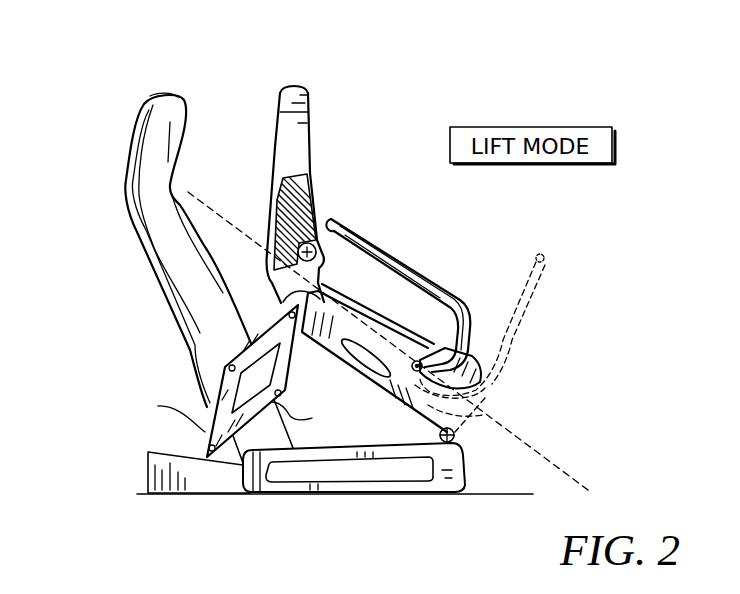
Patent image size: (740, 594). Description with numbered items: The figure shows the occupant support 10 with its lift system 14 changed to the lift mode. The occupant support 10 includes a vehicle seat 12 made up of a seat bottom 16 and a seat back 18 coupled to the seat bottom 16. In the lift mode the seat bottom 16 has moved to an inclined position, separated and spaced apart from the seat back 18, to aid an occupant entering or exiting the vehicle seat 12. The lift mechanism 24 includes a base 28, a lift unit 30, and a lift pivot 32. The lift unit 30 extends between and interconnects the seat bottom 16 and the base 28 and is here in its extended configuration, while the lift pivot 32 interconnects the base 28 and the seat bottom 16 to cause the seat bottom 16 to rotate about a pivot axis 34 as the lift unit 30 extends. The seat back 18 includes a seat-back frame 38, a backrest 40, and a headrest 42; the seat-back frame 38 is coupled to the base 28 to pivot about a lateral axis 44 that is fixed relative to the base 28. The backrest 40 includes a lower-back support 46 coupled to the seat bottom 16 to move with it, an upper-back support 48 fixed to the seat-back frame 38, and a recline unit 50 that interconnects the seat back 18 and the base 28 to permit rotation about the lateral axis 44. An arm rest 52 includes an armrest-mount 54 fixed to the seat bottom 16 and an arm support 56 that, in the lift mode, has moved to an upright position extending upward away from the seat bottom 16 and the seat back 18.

The occupant support 10 is at (60, 118).
The vehicle seat 12 is at (122, 146).
The lift system 14 is at (44, 260).
The seat bottom 16 is at (474, 366).
The seat back 18 is at (199, 202).
The lift mechanism 24 is at (100, 533).
The base 28 is at (250, 485).
The lift unit 30 is at (213, 433).
The lift pivot 32 is at (437, 489).
The pivot axis 34 is at (483, 420).
The seat-back frame 38 is at (283, 424).
The backrest 40 is at (207, 247).
The headrest 42 is at (185, 135).
The lateral axis 44 is at (276, 211).
The lower-back support 46 is at (314, 197).
The upper-back support 48 is at (310, 116).
The recline unit 50 is at (217, 395).
The arm rest 52 is at (473, 274).
The armrest-mount 54 is at (417, 363).
The arm support 56 is at (411, 262).